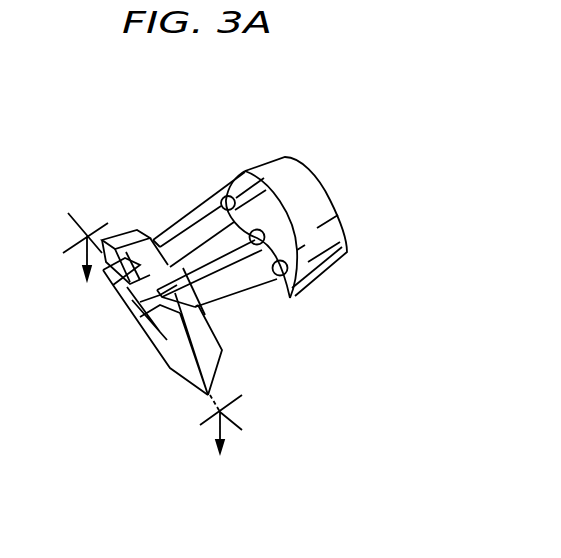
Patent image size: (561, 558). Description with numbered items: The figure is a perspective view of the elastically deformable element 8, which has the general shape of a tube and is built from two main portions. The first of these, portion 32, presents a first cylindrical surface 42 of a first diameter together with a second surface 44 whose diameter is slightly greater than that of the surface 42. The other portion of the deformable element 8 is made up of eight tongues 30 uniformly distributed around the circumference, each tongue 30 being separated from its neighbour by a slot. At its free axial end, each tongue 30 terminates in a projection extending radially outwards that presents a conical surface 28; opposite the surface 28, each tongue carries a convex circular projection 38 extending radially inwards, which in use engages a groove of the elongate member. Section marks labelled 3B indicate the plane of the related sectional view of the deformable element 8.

The deformable element 8 is at (140, 188).
The conical surface 28 is at (224, 352).
The tongue 30 is at (218, 236).
The main portion 32 is at (436, 153).
The circular projection 38 is at (152, 336).
The first cylindrical surface 42 is at (313, 191).
The second surface 44 is at (320, 265).
The section line 3B is at (152, 351).